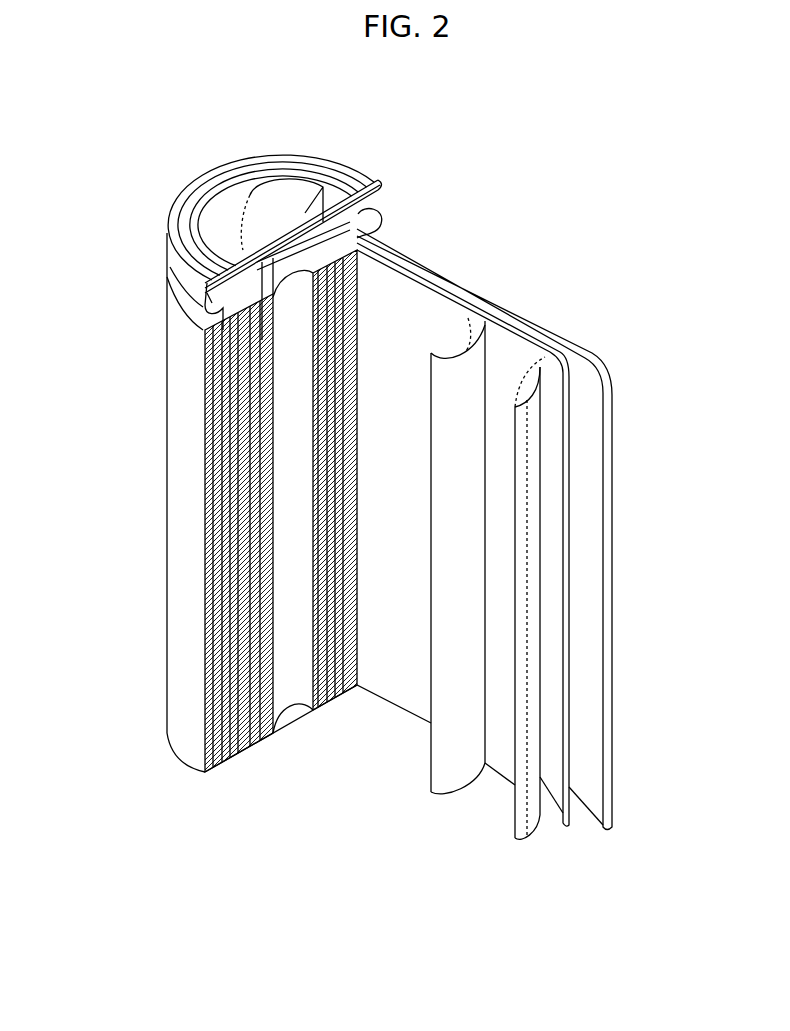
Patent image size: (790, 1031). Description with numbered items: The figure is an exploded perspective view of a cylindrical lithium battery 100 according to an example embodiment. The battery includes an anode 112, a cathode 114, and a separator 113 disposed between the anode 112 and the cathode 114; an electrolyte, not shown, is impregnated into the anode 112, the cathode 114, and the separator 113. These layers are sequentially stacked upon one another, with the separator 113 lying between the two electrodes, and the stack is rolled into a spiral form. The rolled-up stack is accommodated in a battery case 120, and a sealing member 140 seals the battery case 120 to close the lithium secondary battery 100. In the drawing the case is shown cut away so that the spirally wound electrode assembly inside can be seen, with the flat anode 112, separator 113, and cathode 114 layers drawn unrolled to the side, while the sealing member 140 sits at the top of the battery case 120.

The lithium battery 100 is at (471, 132).
The anode 112 is at (593, 360).
The separator 113 is at (464, 318).
The cathode 114 is at (532, 362).
The battery case 120 is at (167, 500).
The sealing member 140 is at (268, 192).